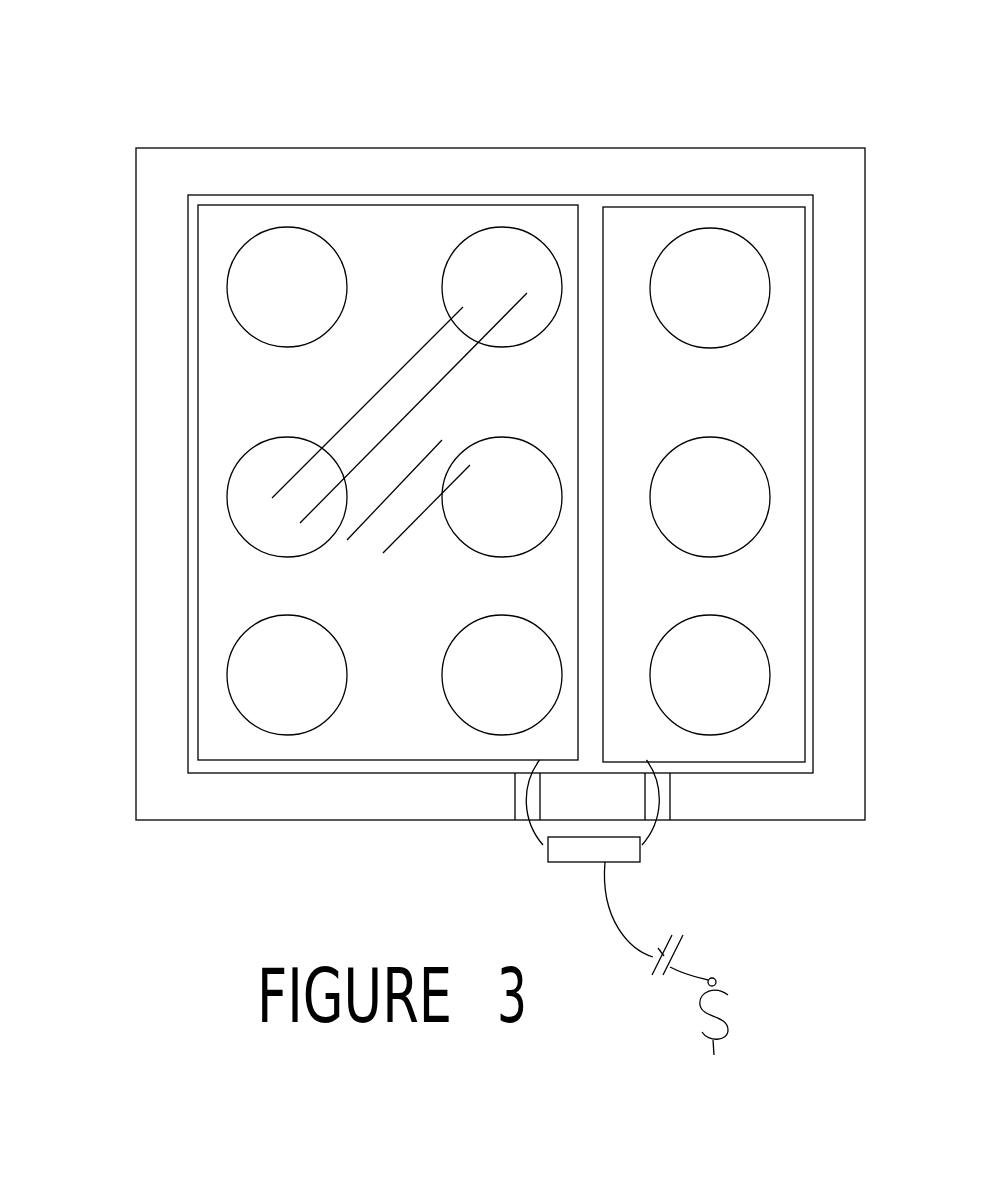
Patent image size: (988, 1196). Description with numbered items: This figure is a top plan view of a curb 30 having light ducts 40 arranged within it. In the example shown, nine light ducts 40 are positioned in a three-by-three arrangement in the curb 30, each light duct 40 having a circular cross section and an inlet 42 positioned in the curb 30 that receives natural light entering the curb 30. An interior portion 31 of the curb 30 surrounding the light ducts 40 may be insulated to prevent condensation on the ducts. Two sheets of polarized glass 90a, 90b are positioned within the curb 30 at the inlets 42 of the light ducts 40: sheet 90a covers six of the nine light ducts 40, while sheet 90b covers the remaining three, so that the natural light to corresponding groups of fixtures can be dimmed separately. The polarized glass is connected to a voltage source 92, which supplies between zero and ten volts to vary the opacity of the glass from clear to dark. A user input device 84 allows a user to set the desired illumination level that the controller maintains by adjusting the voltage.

The curb 30 is at (507, 146).
The interior portion 31 is at (412, 268).
The light duct 40 is at (242, 277).
The inlet 42 is at (510, 303).
The user input device 84 is at (720, 988).
The sheet of polarized glass 90a is at (297, 217).
The sheet of polarized glass 90b is at (763, 223).
The voltage source 92 is at (637, 862).